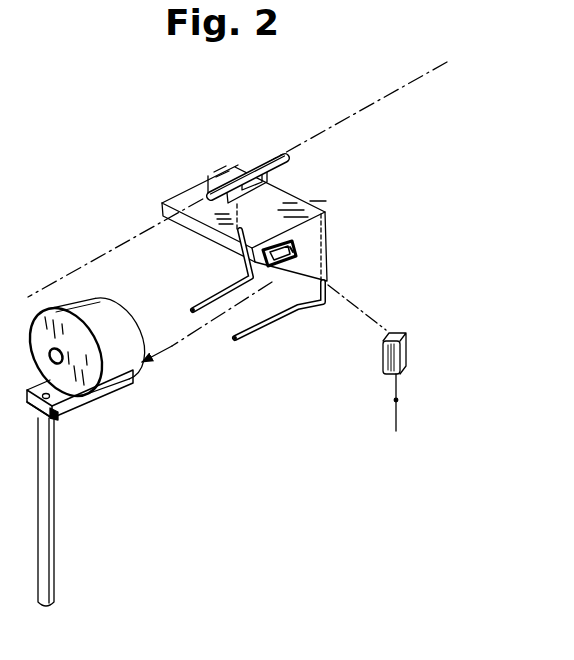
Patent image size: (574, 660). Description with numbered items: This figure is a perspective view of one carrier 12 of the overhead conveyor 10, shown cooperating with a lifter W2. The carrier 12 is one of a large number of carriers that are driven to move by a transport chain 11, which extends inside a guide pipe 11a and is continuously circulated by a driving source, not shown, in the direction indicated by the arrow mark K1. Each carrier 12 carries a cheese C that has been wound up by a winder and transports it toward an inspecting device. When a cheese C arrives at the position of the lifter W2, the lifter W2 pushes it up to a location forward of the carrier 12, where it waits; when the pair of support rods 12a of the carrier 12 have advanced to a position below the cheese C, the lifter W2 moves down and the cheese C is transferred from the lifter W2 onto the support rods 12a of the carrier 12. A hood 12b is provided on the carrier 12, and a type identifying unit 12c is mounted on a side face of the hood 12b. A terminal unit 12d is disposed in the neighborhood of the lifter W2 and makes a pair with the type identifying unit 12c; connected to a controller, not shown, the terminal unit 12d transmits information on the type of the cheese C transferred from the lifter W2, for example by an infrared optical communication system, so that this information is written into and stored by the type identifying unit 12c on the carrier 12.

The overhead conveyor 10 is at (421, 181).
The transport chain 11 is at (71, 266).
The guide pipe 11a is at (263, 151).
The carrier 12 is at (324, 204).
The support rods 12a is at (218, 290).
The hood 12b is at (284, 204).
The type identifying unit 12c is at (329, 234).
The terminal unit 12d is at (406, 350).
The cheese C is at (100, 313).
The lifter W2 is at (56, 497).
The arrow mark indicating circulation direction K1 is at (403, 65).